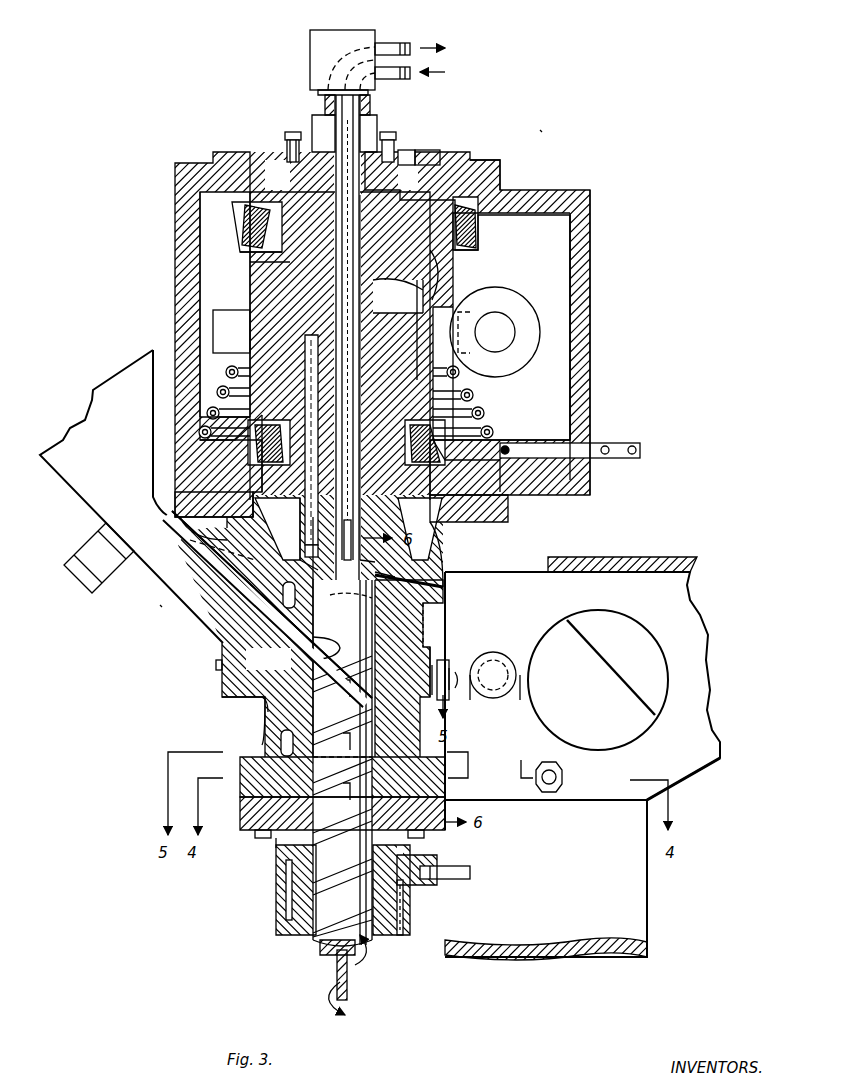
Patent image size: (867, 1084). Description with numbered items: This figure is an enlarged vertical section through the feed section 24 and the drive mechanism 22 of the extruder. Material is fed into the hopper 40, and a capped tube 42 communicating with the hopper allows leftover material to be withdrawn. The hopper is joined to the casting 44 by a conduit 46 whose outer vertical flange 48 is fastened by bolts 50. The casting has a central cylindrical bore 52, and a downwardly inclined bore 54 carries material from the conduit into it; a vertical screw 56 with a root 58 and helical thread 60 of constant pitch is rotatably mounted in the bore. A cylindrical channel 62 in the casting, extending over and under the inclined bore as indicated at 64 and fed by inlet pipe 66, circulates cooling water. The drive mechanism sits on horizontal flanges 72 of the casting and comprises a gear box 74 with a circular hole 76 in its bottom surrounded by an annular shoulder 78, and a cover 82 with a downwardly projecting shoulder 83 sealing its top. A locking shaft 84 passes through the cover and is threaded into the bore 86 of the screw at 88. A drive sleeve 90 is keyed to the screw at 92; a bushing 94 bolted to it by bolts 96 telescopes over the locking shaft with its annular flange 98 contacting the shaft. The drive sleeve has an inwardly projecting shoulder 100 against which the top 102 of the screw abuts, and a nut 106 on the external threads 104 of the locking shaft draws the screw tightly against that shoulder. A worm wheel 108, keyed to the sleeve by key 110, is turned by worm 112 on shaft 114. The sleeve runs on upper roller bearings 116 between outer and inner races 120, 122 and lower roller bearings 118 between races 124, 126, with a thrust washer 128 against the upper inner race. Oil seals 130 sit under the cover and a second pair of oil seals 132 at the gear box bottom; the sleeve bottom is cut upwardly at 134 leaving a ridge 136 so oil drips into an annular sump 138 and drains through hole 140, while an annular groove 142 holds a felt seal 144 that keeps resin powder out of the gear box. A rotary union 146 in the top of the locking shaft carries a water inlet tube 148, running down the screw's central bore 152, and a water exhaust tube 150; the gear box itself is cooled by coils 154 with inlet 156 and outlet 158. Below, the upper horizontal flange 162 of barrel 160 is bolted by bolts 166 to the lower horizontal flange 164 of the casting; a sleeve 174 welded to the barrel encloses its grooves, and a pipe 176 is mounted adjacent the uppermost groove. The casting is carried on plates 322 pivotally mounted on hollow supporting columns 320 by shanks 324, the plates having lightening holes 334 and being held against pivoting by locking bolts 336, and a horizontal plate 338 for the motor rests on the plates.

The drive mechanism 22 is at (551, 128).
The feed section 24 is at (162, 606).
The hopper 40 is at (120, 470).
The capped tube 42 is at (92, 591).
The casting 44 is at (260, 705).
The conduit 46 is at (196, 617).
The outer vertical flange 48 is at (220, 692).
The bolts 50 is at (214, 665).
The central cylindrical bore 52 is at (447, 752).
The downwardly inclined bore 54 is at (256, 668).
The vertical screw 56 is at (331, 628).
The root 58 is at (422, 637).
The helical thread 60 is at (268, 720).
The cylindrical channel 62 is at (422, 618).
The channel extension over and under inclined bore 64 is at (278, 612).
The inlet pipe 66 is at (455, 663).
The horizontal flanges 72 is at (166, 514).
The gear box 74 is at (590, 282).
The circular hole 76 is at (408, 450).
The annular shoulder 78 is at (492, 432).
The cover 82 is at (504, 180).
The annular downwardly projecting shoulder 83 is at (478, 230).
The locking shaft 84 is at (405, 157).
The bore 86 is at (365, 306).
The threaded connection 88 is at (440, 306).
The drive sleeve 90 is at (263, 292).
The key 92 is at (316, 541).
The bushing 94 is at (284, 146).
The bolts 96 is at (290, 136).
The annular flange 98 is at (392, 140).
The inwardly projecting shoulder 100 is at (432, 276).
The top of screw 102 is at (320, 336).
The external threads 104 is at (365, 118).
The nut 106 is at (322, 118).
The worm wheel 108 is at (470, 295).
The key 110 is at (474, 396).
The worm 112 is at (522, 313).
The shaft 114 is at (512, 347).
The upper roller bearings 116 is at (470, 159).
The lower roller bearings 118 is at (466, 466).
The outer bearing race 120 is at (243, 241).
The inner bearing race 122 is at (246, 258).
The outer bearing race 124 is at (231, 446).
The inner bearing race 126 is at (250, 388).
The thrust washer 128 is at (260, 275).
The oil seals 130 is at (432, 156).
The second pair of oil seals 132 is at (418, 529).
The upward cut 134 is at (290, 529).
The downwardly projecting ridge 136 is at (277, 529).
The annular sump 138 is at (310, 567).
The downwardly projecting hole 140 is at (446, 590).
The annular groove 142 is at (379, 552).
The felt seal 144 is at (393, 568).
The rotary union 146 is at (312, 60).
The water inlet tube 148 is at (400, 77).
The water exhaust tube 150 is at (386, 45).
The central bore 152 is at (358, 531).
The water cooling coils 154 is at (228, 372).
The inlet 156 is at (620, 445).
The outlet 158 is at (604, 458).
The barrel 160 is at (276, 920).
The upper horizontal flange 162 is at (242, 836).
The lower horizontal flange 164 is at (242, 782).
The bolts 166 is at (282, 848).
The sleeve 174 is at (406, 938).
The pipe 176 is at (472, 877).
The supporting columns 320 is at (612, 667).
The plates 322 is at (690, 772).
The shanks 324 is at (500, 668).
The lightening holes 334 is at (660, 693).
The locking bolts 336 is at (562, 776).
The horizontal plate 338 is at (620, 558).